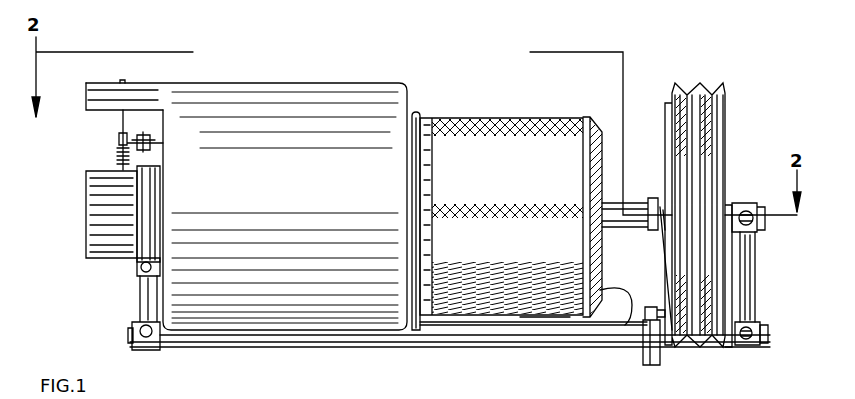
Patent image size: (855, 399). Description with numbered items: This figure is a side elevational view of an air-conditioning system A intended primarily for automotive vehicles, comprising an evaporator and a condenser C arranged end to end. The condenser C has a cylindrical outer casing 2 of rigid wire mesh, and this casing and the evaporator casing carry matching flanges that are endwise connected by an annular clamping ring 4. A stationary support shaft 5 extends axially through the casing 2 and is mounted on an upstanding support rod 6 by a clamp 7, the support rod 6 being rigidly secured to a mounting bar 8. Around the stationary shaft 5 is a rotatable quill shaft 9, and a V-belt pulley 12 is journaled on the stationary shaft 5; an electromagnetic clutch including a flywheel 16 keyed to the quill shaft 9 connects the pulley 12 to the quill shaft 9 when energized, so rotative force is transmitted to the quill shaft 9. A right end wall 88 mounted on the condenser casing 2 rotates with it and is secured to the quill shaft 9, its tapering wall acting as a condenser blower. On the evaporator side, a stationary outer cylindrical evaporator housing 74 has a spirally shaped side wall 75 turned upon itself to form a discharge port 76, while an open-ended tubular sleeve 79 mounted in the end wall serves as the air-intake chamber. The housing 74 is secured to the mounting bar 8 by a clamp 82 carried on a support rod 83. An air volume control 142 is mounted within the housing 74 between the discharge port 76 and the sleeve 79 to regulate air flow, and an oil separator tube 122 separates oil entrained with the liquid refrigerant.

The air-conditioning system A is at (340, 81).
The discharge port 76 is at (86, 92).
The air volume control 142 is at (121, 151).
The tubular sleeve 79 is at (86, 233).
The clamp 82 is at (141, 258).
The support rod 83 is at (140, 298).
The outer cylindrical evaporator housing 74 is at (243, 328).
The spirally shaped side wall 75 is at (345, 328).
The annular clamping ring 4 is at (417, 118).
The cylindrical outer casing 2 is at (535, 116).
The right end wall 88 is at (600, 130).
The rotatable quill shaft 9 is at (634, 205).
The flywheel 16 is at (662, 253).
The V-belt pulley 12 is at (700, 342).
The oil separator tube 122 is at (622, 298).
The condenser C is at (521, 316).
The stationary support shaft 5 is at (763, 212).
The support rod 6 is at (752, 268).
The clamp 7 is at (752, 326).
The mounting bar 8 is at (768, 336).